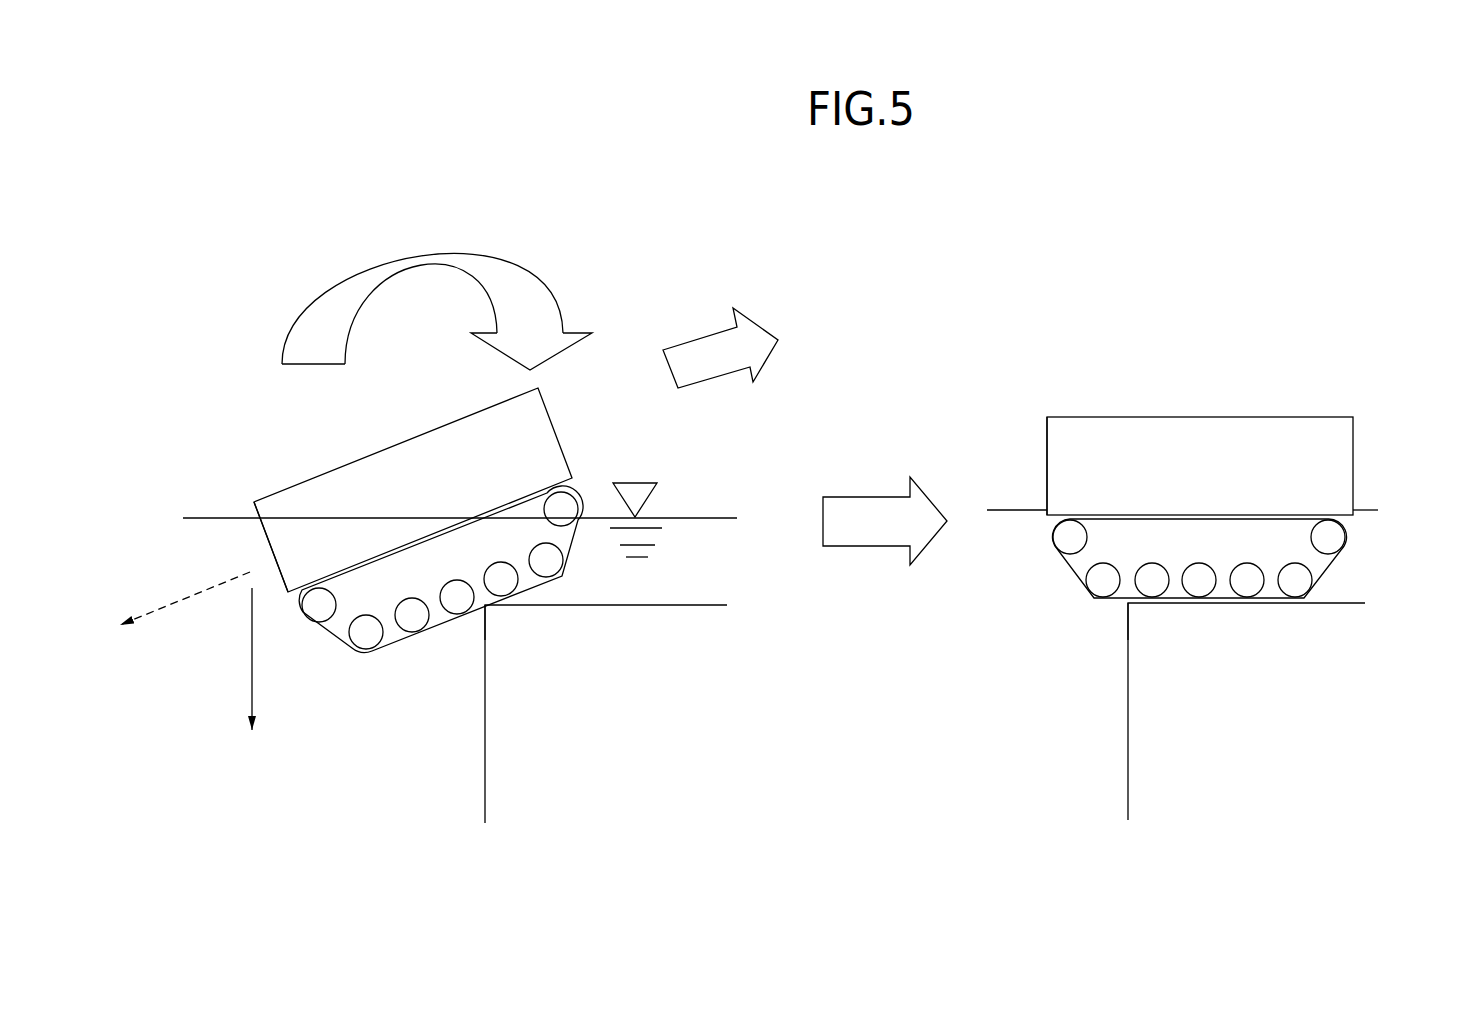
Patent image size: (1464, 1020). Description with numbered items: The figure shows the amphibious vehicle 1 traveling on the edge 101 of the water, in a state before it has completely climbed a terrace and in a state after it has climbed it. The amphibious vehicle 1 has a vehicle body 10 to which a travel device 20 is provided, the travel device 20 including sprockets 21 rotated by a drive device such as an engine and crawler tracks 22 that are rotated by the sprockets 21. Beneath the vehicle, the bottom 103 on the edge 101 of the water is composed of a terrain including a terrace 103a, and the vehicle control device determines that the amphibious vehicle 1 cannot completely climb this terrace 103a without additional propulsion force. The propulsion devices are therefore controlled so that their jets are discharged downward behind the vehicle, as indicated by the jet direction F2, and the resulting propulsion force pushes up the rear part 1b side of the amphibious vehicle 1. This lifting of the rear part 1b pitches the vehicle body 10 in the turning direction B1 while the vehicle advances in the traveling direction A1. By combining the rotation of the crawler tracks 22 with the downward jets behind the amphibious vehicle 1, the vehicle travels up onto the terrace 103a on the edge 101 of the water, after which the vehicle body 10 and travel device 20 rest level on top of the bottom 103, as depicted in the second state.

The amphibious vehicle 1 is at (318, 428).
The rear part 1b is at (266, 543).
The vehicle body 10 is at (288, 487).
The travel device 20 is at (870, 576).
The sprocket 21 is at (563, 507).
The crawler track 22 is at (440, 627).
The edge of water 101 is at (652, 418).
The bottom of water 103 is at (580, 770).
The terrace 103a is at (480, 632).
The traveling direction A1 is at (702, 330).
The turning direction B1 is at (378, 258).
The jet direction (downward) F2 is at (248, 660).